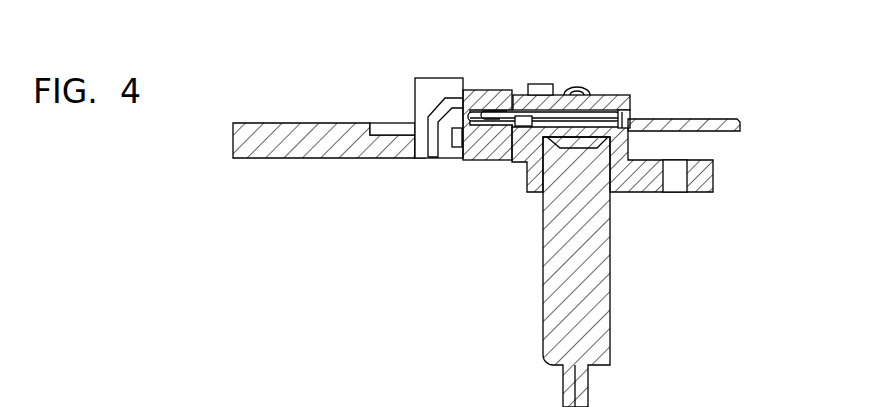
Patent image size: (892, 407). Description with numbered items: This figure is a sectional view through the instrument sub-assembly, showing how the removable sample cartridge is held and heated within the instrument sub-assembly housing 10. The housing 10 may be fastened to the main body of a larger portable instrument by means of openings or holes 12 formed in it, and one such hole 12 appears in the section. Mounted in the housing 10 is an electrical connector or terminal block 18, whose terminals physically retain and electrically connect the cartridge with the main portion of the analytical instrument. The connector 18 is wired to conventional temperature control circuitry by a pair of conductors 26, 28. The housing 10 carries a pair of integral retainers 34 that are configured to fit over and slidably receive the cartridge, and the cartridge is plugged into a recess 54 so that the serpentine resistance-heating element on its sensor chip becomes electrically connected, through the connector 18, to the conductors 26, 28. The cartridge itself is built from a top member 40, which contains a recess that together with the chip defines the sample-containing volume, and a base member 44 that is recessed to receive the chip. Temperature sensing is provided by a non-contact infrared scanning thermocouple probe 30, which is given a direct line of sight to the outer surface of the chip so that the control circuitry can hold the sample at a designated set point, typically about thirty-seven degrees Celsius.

The instrument sub-assembly housing 10 is at (287, 162).
The openings or holes 12 is at (673, 195).
The electrical connector or terminal block 18 is at (477, 89).
The conductor 26 is at (420, 175).
The conductor 28 is at (432, 152).
The infrared scanning thermocouple device or probe 30 is at (541, 304).
The integral retainers 34 is at (545, 82).
The top member 40 is at (615, 97).
The base member 44 is at (732, 118).
The recess 54 is at (522, 100).